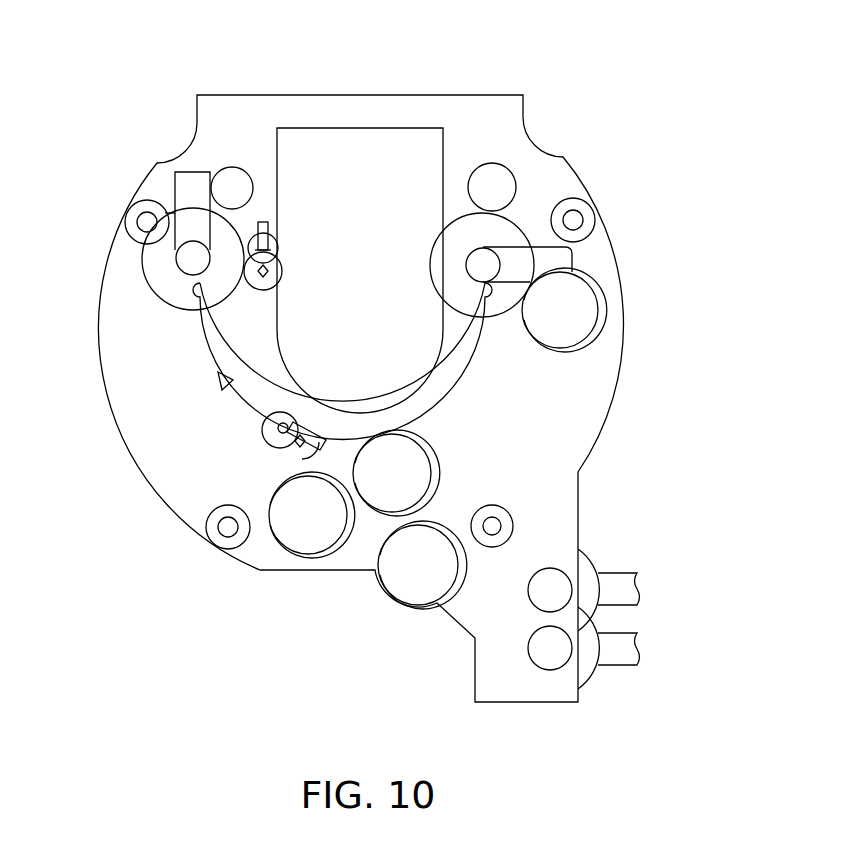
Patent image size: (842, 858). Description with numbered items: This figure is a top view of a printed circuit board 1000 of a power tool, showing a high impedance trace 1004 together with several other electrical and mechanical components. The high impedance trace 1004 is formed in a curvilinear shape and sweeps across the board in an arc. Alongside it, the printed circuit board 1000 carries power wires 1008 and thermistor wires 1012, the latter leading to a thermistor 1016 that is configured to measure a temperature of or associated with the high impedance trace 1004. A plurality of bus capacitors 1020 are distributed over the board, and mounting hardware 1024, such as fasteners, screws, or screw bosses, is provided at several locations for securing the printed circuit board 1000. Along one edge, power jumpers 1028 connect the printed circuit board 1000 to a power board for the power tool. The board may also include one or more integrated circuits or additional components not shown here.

The printed circuit board 1000 is at (567, 182).
The high impedance trace 1004 is at (205, 327).
The power wires 1008 is at (193, 258).
The thermistor wires 1012 is at (263, 247).
The thermistor 1016 is at (222, 382).
The bus capacitors 1020 is at (598, 297).
The mounting hardware 1024 is at (135, 218).
The power jumpers 1028 is at (555, 583).